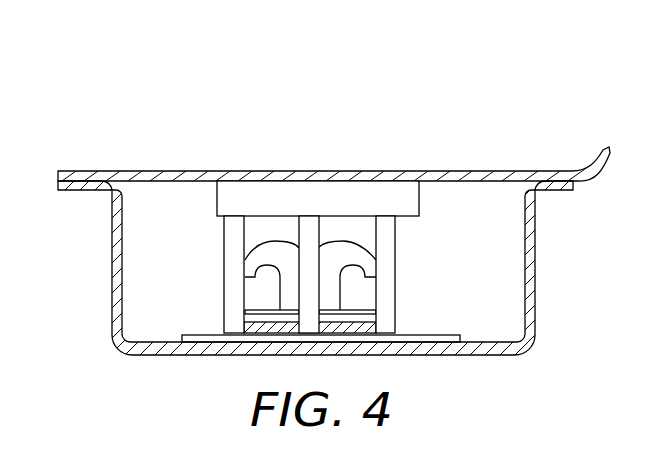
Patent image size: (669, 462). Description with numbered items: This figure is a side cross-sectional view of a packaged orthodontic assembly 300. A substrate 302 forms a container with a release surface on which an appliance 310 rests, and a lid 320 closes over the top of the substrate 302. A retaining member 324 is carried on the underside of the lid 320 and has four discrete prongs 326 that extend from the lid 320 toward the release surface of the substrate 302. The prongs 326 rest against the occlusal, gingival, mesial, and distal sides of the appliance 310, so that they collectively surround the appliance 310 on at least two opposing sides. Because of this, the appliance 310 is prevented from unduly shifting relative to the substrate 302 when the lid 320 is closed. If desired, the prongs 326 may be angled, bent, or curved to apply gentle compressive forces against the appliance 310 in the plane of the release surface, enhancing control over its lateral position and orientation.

The assembly 300 is at (560, 92).
The substrate 302 is at (537, 238).
The appliance 310 is at (331, 296).
The lid 320 is at (478, 172).
The retaining member 324 is at (265, 195).
The prongs 326 is at (311, 228).